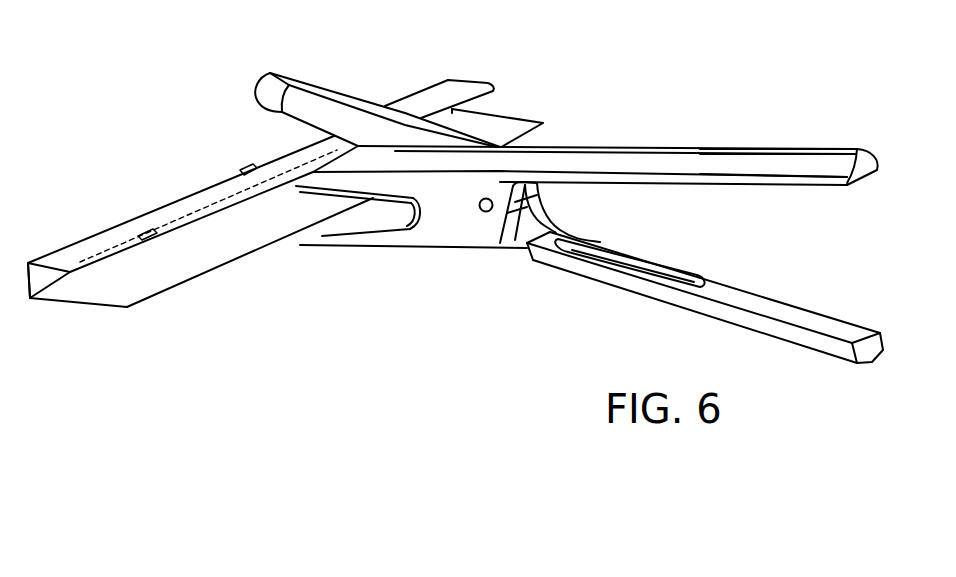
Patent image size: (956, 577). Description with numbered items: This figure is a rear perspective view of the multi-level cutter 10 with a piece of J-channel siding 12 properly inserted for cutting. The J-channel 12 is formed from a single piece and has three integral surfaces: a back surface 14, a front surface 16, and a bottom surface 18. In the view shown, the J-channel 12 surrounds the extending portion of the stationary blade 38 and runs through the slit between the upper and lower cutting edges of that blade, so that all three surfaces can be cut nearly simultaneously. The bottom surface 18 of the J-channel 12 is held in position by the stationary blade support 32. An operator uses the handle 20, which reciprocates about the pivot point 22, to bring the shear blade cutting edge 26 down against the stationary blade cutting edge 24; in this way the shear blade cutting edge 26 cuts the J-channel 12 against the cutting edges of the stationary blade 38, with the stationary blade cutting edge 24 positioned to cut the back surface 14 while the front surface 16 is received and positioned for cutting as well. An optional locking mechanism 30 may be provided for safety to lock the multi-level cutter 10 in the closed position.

The multi-level cutter 10 is at (455, 233).
The J-channel siding 12 is at (200, 275).
The back surface 14 is at (146, 228).
The front surface 16 is at (192, 260).
The bottom surface 18 is at (49, 280).
The handle 20 is at (660, 168).
The pivot point 22 is at (440, 205).
The stationary blade cutting edge 24 is at (313, 173).
The shear blade cutting edge 26 is at (282, 112).
The locking mechanism 30 is at (573, 258).
The stationary blade support 32 is at (246, 166).
The stationary blade 38 is at (484, 211).